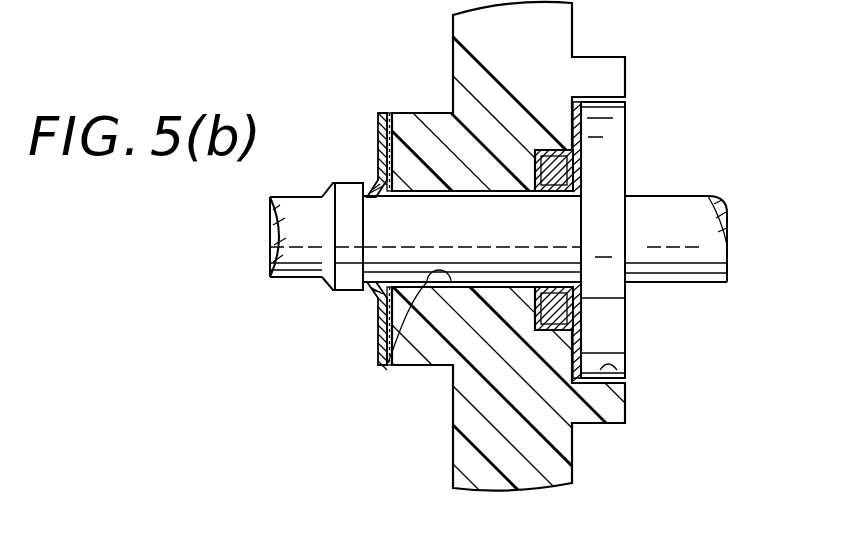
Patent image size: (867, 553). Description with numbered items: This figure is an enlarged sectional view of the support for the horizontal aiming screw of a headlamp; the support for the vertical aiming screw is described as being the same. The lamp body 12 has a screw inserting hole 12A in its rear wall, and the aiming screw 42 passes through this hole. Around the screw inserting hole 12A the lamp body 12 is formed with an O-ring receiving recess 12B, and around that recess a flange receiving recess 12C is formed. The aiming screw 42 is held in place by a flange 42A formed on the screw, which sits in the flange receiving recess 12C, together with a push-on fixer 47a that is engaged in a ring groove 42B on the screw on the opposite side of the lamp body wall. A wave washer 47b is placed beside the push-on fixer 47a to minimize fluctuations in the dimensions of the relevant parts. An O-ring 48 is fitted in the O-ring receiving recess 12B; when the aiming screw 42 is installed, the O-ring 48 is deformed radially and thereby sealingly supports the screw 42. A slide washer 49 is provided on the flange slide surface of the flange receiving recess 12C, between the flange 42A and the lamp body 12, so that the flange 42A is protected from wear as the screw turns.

The lamp body 12 is at (555, 35).
The screw inserting hole 12A is at (387, 365).
The O-ring receiving recess 12B is at (558, 303).
The flange receiving recess 12C is at (607, 386).
The aiming screw 42 is at (673, 186).
The flange 42A is at (610, 122).
The ring groove 42B is at (368, 290).
The push-on fixer 47a is at (375, 132).
The wave washer 47b is at (388, 112).
The O-ring 48 is at (576, 308).
The slide washer 49 is at (578, 322).